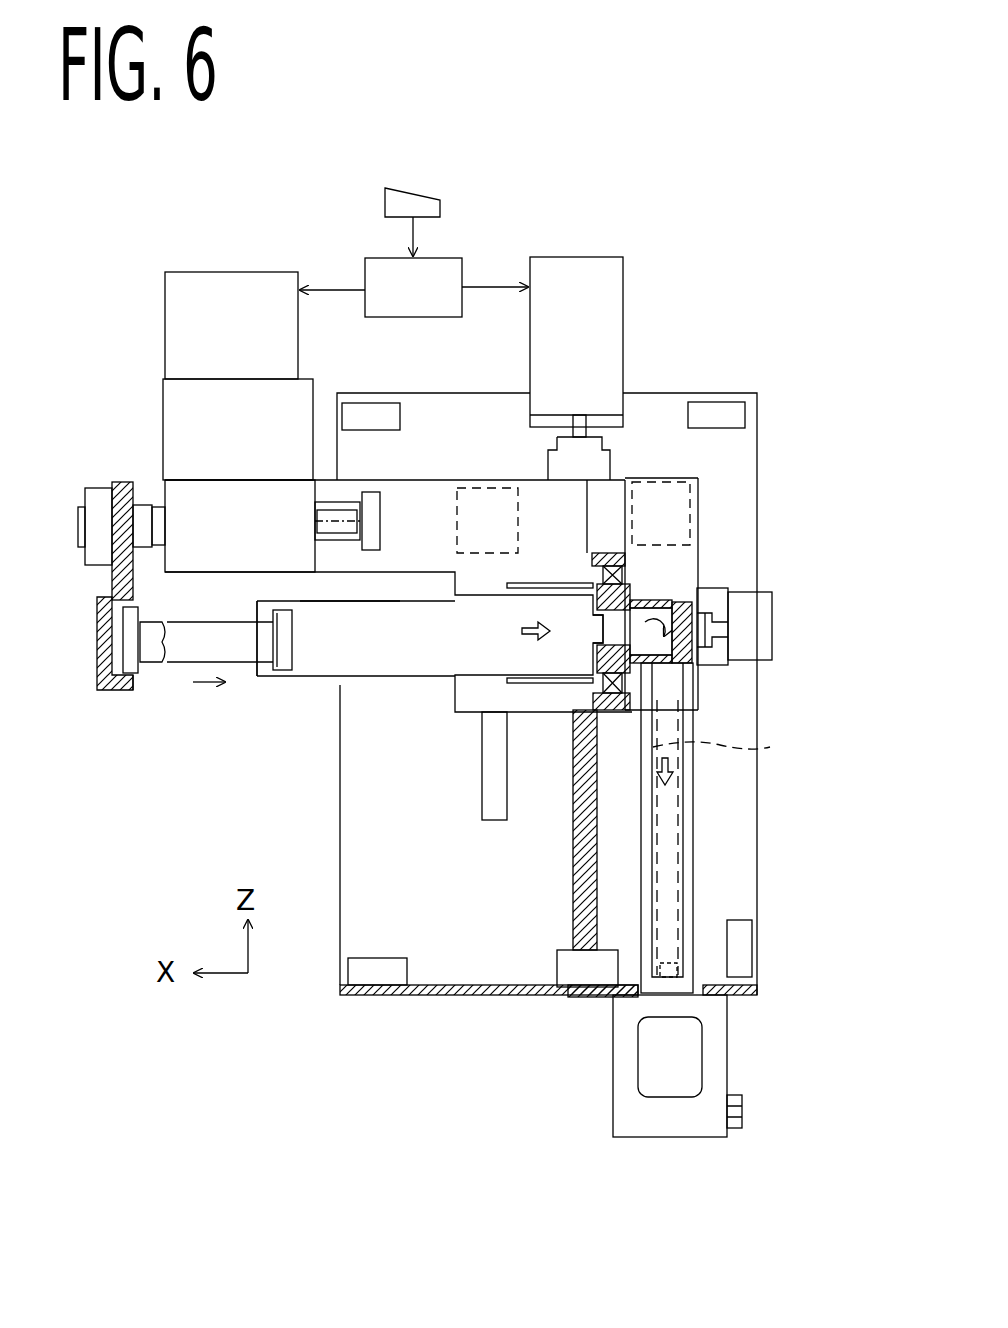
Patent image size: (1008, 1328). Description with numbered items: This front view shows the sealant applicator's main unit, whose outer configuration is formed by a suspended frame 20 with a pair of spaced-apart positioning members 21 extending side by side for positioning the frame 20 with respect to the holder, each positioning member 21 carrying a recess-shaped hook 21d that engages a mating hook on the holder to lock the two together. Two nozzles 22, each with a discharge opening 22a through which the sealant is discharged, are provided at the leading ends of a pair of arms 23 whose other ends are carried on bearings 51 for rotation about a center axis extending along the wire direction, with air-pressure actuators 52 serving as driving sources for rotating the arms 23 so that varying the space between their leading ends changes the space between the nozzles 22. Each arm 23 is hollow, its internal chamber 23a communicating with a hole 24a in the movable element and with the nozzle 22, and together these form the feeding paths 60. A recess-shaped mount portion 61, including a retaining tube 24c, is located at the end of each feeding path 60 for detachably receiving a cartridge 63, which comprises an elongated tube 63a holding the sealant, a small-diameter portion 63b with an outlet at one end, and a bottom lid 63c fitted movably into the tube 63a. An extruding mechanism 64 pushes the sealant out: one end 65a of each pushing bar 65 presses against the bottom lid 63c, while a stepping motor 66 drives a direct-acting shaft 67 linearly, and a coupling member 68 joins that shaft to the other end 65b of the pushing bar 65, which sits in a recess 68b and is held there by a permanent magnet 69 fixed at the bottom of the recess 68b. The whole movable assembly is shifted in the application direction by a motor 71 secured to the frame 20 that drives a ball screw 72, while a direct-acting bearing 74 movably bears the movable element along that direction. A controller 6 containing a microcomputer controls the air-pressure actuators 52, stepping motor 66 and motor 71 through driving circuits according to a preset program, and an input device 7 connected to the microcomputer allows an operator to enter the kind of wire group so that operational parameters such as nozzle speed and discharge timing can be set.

The controller 6 is at (398, 318).
The input device 7 is at (430, 191).
The frame 20 is at (446, 997).
The positioning member 21 is at (656, 1128).
The hook 21d is at (735, 1130).
The nozzle 22 is at (700, 980).
The discharge opening 22a is at (670, 963).
The arm 23 is at (695, 797).
The internal chamber 23a is at (739, 750).
The hole 24a is at (663, 655).
The retaining tube 24c is at (540, 582).
The bearing 51 is at (628, 575).
The air-pressure actuator 52 is at (762, 600).
The feeding path 60 is at (832, 692).
The mount portion 61 is at (548, 686).
The cartridge 63 is at (418, 754).
The tube 63a is at (330, 680).
The small-diameter portion 63b is at (583, 636).
The bottom lid 63c is at (272, 678).
The extruding mechanism 64 is at (172, 700).
The pushing bar 65 is at (186, 662).
The one end of pushing bar 65a is at (285, 633).
The other end of pushing bar 65b is at (130, 628).
The stepping motor 66 is at (172, 315).
The direct-acting shaft 67 is at (347, 512).
The coupling member 68 is at (118, 486).
The recess 68b is at (148, 688).
The permanent magnet 69 is at (109, 697).
The motor 71 is at (612, 322).
The ball screw 72 is at (577, 888).
The direct-acting bearing 74 is at (490, 794).